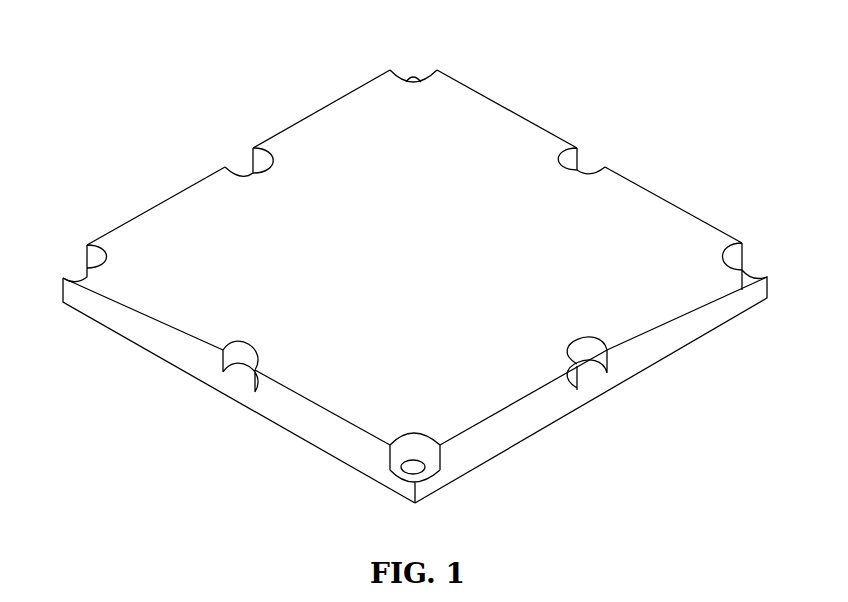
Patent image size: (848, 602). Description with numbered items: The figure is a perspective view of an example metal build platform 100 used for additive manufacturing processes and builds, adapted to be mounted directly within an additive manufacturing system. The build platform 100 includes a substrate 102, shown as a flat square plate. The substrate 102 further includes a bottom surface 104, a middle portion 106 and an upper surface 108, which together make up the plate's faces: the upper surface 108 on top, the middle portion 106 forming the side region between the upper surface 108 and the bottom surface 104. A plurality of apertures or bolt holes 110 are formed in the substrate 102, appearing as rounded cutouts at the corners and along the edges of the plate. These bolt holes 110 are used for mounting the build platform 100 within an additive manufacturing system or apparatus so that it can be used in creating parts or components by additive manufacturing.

The build platform 100 is at (252, 84).
The substrate 102 is at (431, 287).
The bottom surface 104 is at (138, 347).
The middle portion 106 is at (696, 320).
The upper surface 108 is at (452, 172).
The apertures or bolt holes 110 is at (413, 68).